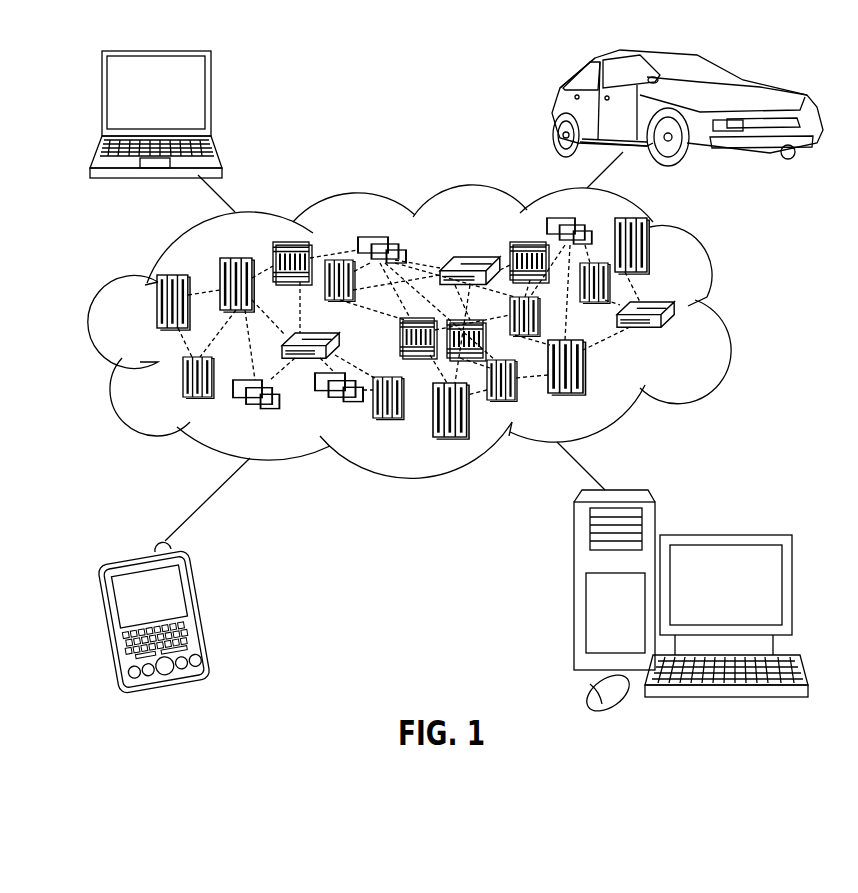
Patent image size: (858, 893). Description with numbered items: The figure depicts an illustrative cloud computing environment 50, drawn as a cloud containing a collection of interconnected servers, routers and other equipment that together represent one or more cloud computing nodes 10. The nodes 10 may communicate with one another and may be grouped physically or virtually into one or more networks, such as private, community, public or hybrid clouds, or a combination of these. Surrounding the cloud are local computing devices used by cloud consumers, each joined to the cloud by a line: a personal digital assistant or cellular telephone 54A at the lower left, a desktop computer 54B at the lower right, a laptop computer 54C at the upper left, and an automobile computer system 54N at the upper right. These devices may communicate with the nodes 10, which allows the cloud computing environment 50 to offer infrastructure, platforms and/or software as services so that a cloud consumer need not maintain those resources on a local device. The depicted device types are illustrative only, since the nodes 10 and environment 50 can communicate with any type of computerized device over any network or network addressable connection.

The cloud computing nodes 10 is at (684, 335).
The cloud computing environment 50 is at (725, 312).
The personal digital assistant or cellular telephone 54A is at (203, 607).
The desktop computer 54B is at (726, 534).
The laptop computer 54C is at (210, 98).
The automobile computer system 54N is at (552, 110).